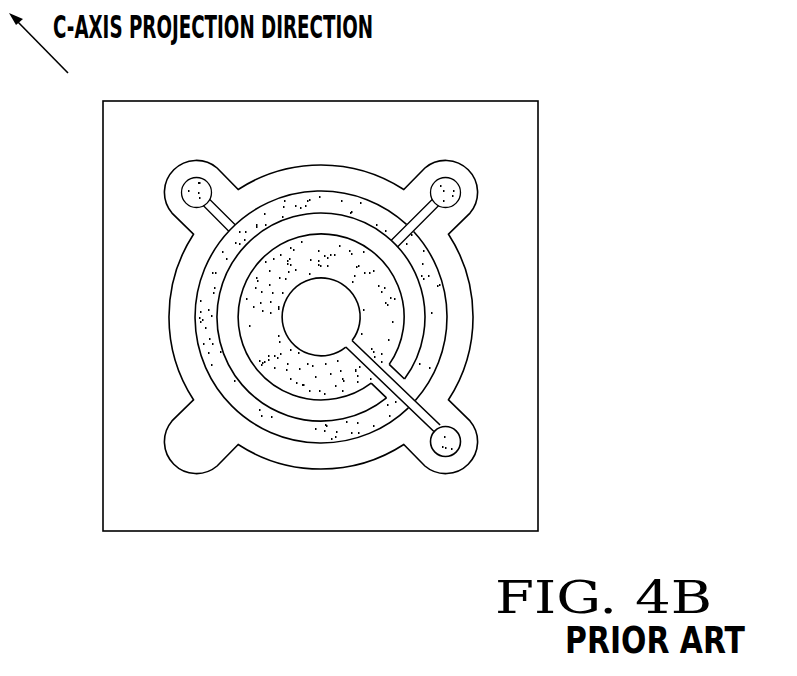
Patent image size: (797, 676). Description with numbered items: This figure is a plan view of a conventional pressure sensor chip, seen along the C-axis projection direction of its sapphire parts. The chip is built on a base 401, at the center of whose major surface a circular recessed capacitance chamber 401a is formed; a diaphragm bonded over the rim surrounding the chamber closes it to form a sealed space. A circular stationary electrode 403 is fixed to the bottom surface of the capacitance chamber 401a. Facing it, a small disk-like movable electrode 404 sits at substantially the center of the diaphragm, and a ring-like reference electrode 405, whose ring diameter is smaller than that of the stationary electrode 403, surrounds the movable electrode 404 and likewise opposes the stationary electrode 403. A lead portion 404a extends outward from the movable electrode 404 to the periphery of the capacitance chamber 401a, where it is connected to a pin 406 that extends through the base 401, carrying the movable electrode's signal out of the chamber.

The base 401 is at (518, 213).
The capacitance chamber 401a is at (330, 178).
The stationary electrode 403 is at (218, 367).
The movable electrode 404 is at (312, 307).
The lead portion 404a is at (447, 403).
The reference electrode 405 is at (425, 326).
The pin 406 is at (460, 443).